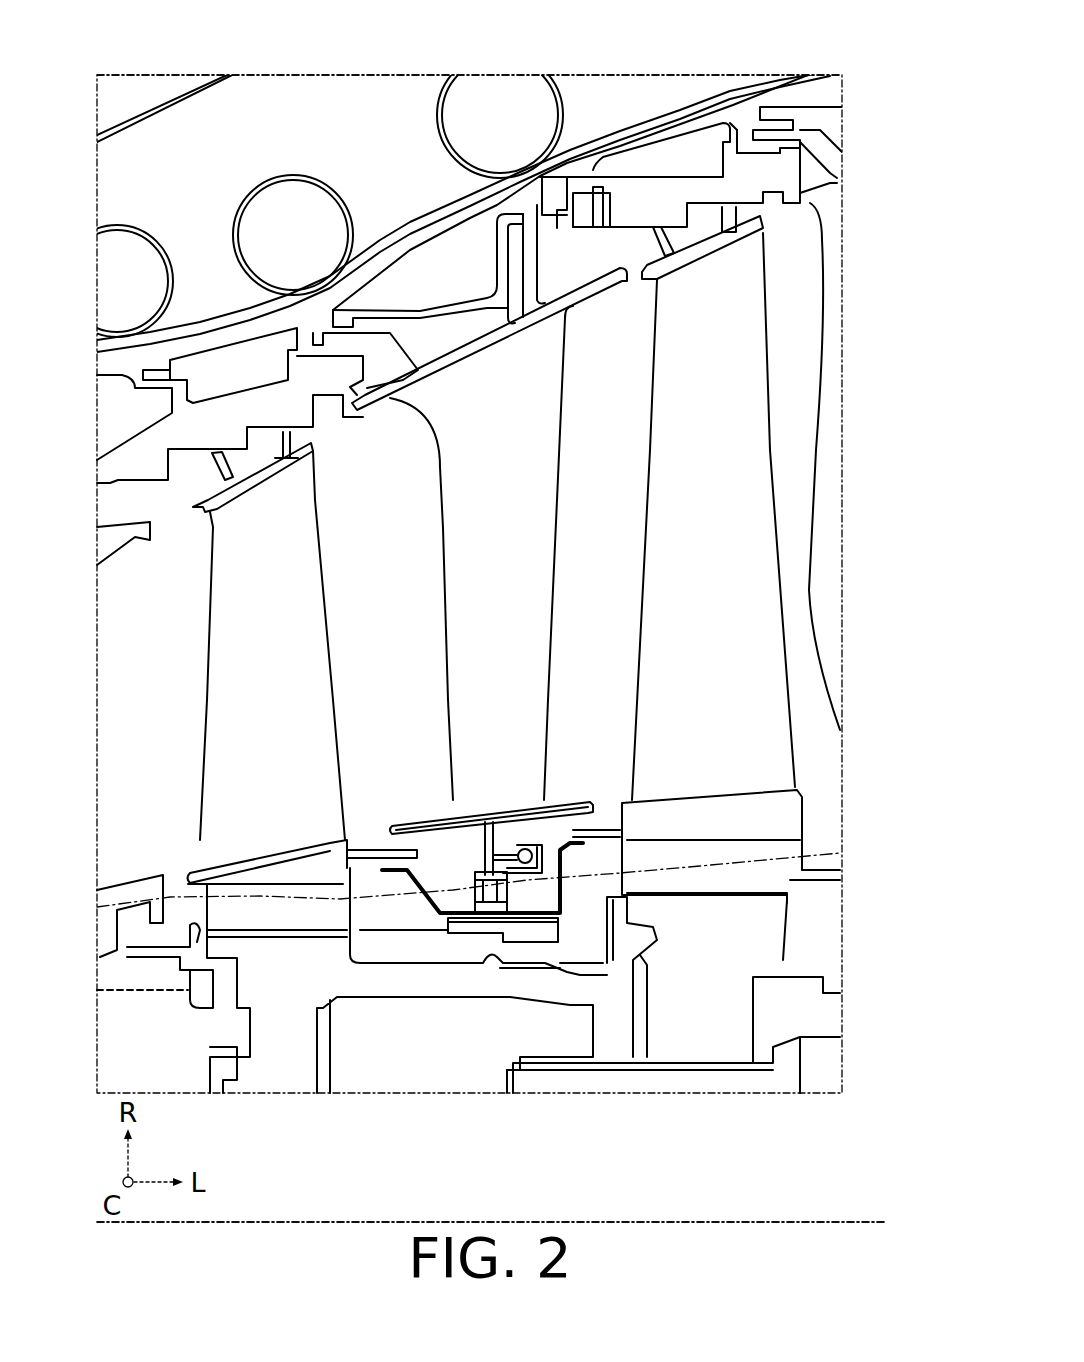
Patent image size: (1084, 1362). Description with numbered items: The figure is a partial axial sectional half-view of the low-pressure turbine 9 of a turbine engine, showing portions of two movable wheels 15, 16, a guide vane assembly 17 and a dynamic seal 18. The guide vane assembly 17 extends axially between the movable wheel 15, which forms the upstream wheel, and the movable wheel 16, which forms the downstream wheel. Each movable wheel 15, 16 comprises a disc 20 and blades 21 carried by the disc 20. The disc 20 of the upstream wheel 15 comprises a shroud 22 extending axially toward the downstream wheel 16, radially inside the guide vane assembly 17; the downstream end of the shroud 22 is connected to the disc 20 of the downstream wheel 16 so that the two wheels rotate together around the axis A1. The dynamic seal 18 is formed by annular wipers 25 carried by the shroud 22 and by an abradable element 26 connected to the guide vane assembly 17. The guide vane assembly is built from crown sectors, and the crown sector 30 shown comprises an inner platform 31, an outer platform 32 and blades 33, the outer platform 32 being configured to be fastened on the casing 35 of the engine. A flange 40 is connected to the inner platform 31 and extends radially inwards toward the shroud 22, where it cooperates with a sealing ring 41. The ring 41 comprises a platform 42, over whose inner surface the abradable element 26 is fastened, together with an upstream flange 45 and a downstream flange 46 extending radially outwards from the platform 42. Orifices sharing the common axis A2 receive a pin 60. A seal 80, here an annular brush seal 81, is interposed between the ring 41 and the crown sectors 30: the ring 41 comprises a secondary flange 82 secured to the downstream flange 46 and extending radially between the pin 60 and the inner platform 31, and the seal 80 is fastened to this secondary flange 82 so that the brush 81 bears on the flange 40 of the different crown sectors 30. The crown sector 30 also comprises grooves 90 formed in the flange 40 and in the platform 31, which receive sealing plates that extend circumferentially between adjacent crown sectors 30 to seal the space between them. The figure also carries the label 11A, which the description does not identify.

The turbine 9 is at (140, 68).
The turbine section 11A is at (402, 569).
The movable wheel 15 is at (250, 448).
The movable wheel 16 is at (705, 222).
The guide vane assembly 17 is at (453, 320).
The dynamic seal 18 is at (690, 1098).
The disc 20 is at (733, 933).
The blades 21 is at (303, 528).
The shroud 22 is at (448, 1000).
The annular wipers 25 is at (560, 963).
The abradable element 26 is at (545, 935).
The crown sector 30 is at (912, 462).
The inner platform 31 is at (555, 818).
The outer platform 32 is at (597, 288).
The blades 33 is at (548, 540).
The casing 35 is at (237, 318).
The flange 40 is at (460, 832).
The sealing ring 41 is at (445, 1124).
The platform 42 is at (450, 920).
The upstream flange 45 is at (465, 935).
The downstream flange 46 is at (480, 955).
The pin 60 is at (782, 855).
The seal 80 is at (512, 852).
The annular brush seal 81 is at (489, 872).
The secondary flange 82 is at (540, 848).
The grooves 90 is at (466, 856).
The axis A1 is at (740, 1222).
The common axis A2 is at (97, 907).